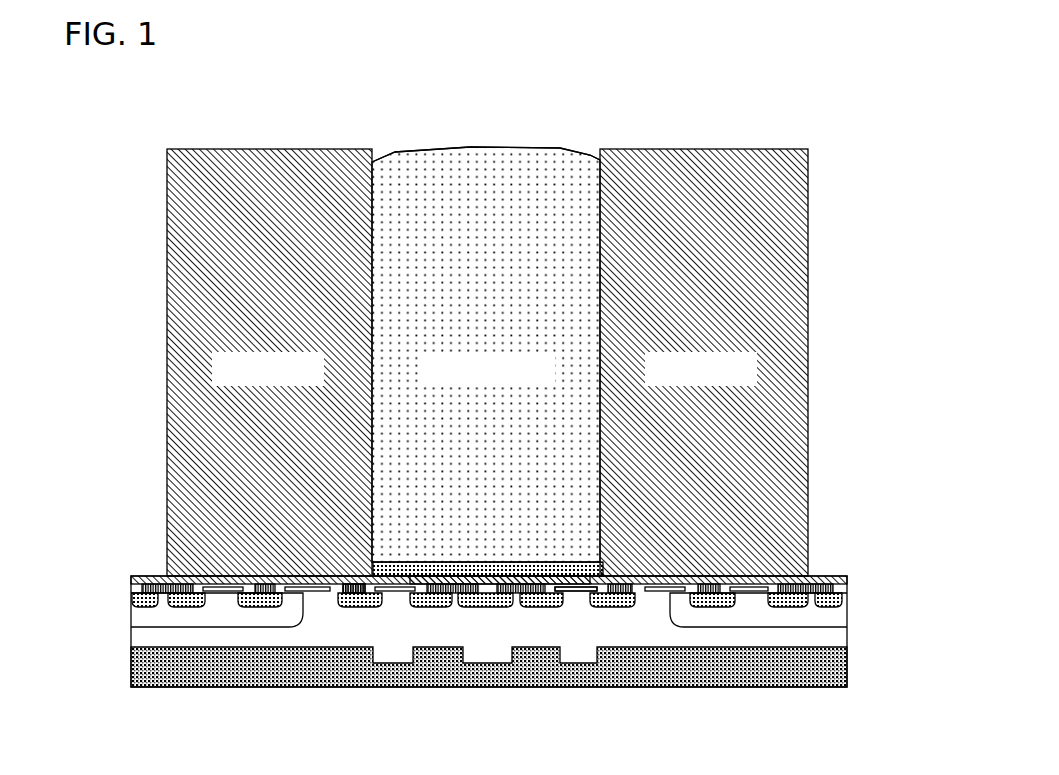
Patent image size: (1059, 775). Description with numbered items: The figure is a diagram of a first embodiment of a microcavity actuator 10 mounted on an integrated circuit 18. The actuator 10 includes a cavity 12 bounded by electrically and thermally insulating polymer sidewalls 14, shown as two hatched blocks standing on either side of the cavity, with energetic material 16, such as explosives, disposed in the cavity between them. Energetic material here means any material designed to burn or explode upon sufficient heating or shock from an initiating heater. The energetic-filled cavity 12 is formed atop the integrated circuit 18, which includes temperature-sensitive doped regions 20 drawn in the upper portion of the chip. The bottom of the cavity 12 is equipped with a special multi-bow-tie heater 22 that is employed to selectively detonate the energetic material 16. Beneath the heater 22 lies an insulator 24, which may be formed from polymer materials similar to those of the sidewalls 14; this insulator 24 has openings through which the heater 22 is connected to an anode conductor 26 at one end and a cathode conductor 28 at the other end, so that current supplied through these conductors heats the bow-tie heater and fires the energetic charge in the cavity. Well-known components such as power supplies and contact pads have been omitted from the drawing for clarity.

The microcavity actuator 10 is at (485, 360).
The cavity 12 is at (513, 145).
The polymer sidewalls 14 is at (305, 148).
The energetic material 16 is at (457, 148).
The integrated circuit 18 is at (485, 631).
The doped regions 20 is at (205, 632).
The multi-bow-tie heater 22 is at (421, 561).
The insulator 24 is at (472, 583).
The anode conductor 26 is at (398, 593).
The cathode conductor 28 is at (577, 591).